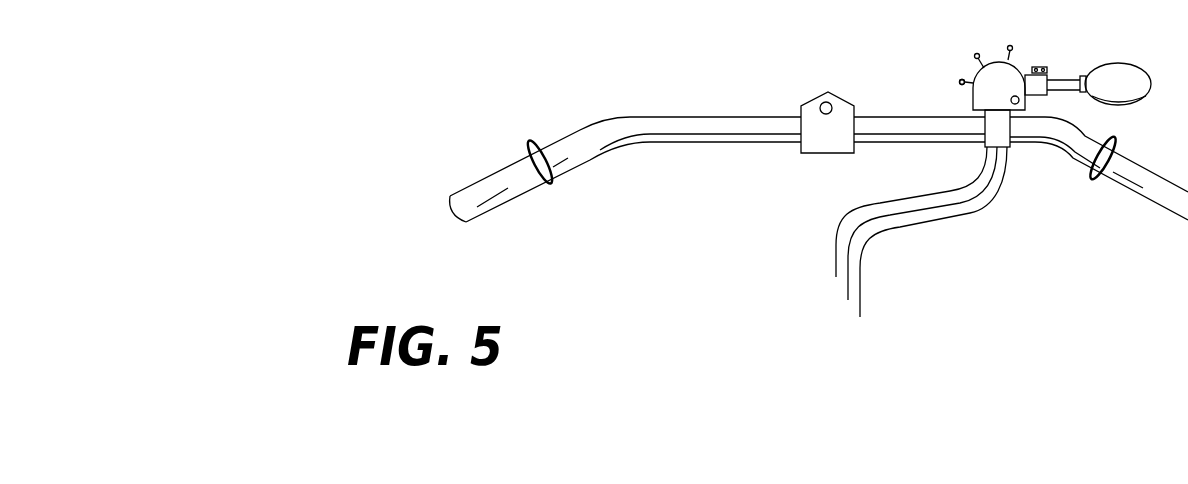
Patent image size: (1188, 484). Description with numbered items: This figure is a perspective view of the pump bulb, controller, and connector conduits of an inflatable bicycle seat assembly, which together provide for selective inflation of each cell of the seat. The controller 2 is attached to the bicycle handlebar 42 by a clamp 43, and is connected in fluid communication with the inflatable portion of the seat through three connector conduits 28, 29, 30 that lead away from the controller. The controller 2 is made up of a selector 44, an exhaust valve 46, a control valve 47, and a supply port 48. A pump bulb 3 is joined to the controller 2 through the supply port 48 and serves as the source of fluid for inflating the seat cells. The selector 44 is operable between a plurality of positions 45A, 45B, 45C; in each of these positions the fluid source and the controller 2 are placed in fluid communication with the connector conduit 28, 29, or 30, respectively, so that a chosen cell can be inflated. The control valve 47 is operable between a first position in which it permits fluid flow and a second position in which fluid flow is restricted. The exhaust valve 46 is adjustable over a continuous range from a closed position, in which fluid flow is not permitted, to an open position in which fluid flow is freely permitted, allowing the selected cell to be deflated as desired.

The controller 2 is at (1048, 27).
The pump bulb 3 is at (1124, 80).
The connector conduit 28 is at (902, 227).
The connector conduit 29 is at (911, 238).
The connector conduit 30 is at (929, 247).
The handlebar 42 is at (706, 130).
The clamp 43 is at (993, 125).
The selector 44 is at (962, 80).
The selector position 45A is at (950, 92).
The selector position 45B is at (974, 49).
The selector position 45C is at (1024, 43).
The exhaust valve 46 is at (1044, 70).
The control valve 47 is at (1017, 104).
The supply port 48 is at (1027, 88).